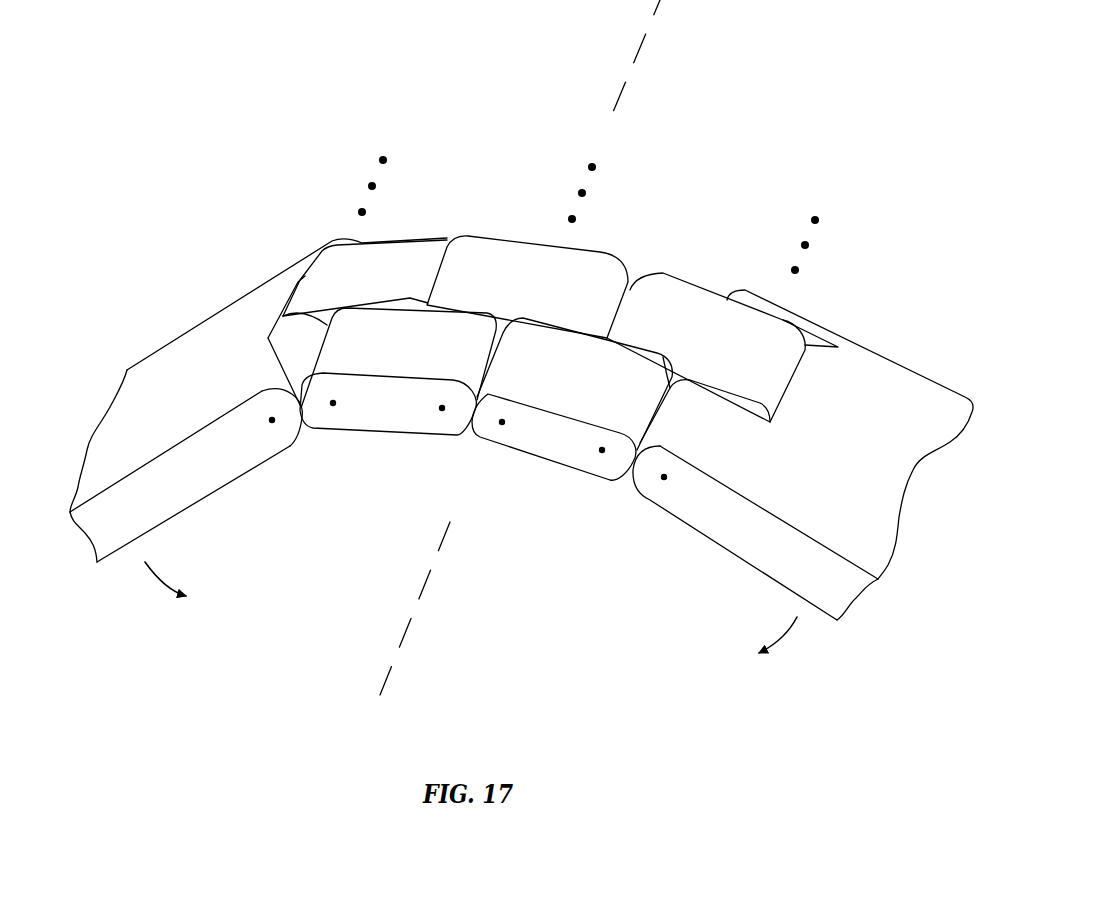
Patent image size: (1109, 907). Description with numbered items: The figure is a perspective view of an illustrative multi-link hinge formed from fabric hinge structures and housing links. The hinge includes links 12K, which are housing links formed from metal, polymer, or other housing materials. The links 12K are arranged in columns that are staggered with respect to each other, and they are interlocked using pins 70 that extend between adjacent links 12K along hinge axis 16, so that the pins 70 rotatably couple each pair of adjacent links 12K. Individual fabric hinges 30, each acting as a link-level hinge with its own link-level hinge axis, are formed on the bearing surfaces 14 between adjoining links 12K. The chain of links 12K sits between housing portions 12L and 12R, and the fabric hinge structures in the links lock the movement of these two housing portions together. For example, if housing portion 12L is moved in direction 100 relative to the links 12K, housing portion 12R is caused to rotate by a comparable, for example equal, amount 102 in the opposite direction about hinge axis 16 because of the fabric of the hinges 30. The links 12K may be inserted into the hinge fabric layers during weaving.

The links 12K is at (505, 248).
The housing portion 12L is at (213, 478).
The housing portion 12R is at (755, 553).
The bearing surfaces 14 is at (630, 282).
The hinge axis 16 is at (660, 4).
The fabric hinges 30 is at (644, 256).
The pins 70 is at (272, 417).
The direction 100 is at (153, 580).
The amount 102 is at (790, 658).